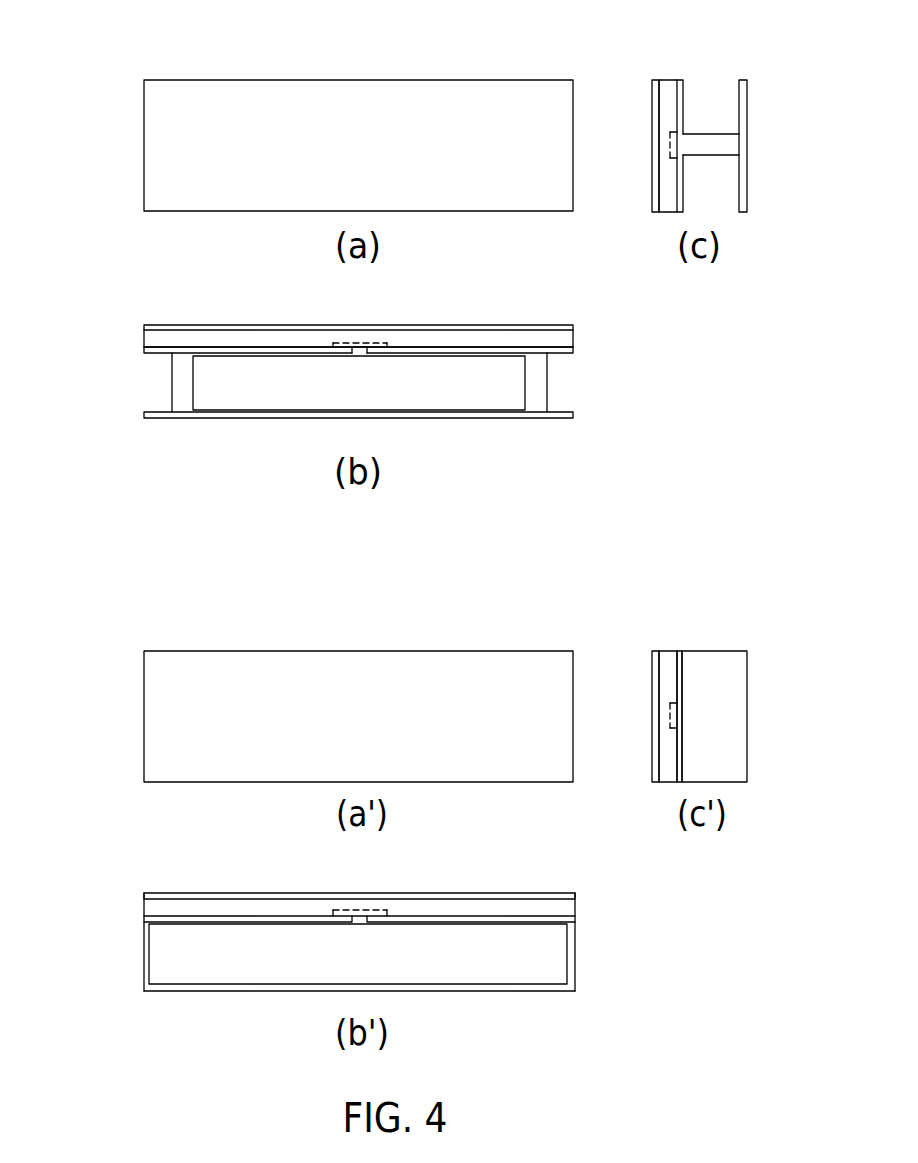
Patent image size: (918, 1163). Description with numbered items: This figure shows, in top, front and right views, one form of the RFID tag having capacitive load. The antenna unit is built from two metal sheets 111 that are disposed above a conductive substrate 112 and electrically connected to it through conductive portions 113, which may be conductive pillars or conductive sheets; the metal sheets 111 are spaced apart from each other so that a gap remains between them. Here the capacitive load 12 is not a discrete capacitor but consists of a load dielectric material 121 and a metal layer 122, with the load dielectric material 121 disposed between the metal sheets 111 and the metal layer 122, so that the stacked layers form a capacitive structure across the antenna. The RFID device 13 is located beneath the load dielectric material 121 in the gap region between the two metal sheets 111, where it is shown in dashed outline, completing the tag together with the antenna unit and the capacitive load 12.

The capacitive load 12 is at (84, 282).
The RFID device 13 is at (360, 353).
The metal sheet 111 is at (155, 352).
The conductive substrate 112 is at (255, 413).
The conductive portion 113 is at (183, 392).
The load dielectric material 121 is at (158, 340).
The metal layer 122 is at (230, 95).